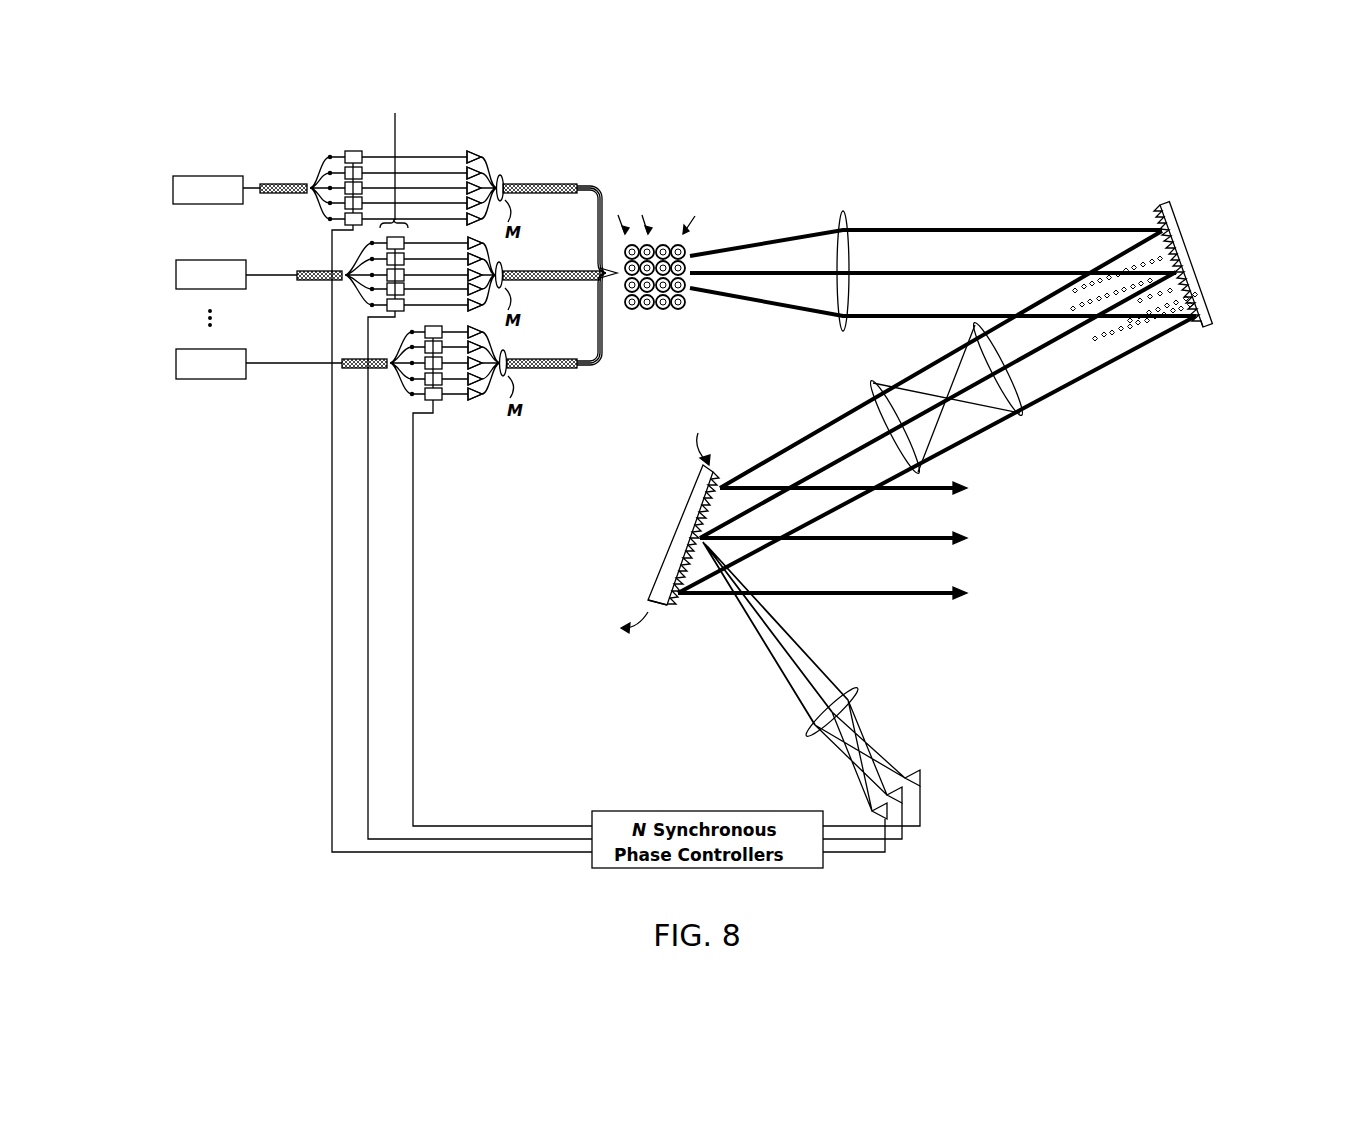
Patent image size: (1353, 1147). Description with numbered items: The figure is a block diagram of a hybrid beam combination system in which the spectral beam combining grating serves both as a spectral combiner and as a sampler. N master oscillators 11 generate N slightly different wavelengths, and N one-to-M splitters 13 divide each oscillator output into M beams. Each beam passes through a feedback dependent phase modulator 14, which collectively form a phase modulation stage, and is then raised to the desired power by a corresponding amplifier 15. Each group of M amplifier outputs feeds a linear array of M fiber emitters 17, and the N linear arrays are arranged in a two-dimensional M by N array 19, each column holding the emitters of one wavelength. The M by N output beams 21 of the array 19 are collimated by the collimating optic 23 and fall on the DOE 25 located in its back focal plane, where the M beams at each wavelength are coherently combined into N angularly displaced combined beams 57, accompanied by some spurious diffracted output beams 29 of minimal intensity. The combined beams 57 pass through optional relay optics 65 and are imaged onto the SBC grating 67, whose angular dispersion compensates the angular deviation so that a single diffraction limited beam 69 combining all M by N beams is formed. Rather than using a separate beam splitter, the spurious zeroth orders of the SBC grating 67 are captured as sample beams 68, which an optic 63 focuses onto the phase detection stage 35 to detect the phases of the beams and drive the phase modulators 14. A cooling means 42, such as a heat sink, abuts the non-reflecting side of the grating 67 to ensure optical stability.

The master oscillators 11 is at (171, 146).
The 1:M splitters 13 is at (381, 397).
The phase modulators 14 is at (338, 141).
The amplifiers 15 is at (455, 143).
The fiber emitters 17 is at (566, 330).
The M×N array 19 is at (687, 322).
The output beams 21 is at (777, 226).
The collimating optic 23 is at (846, 212).
The DOE 25 is at (1166, 203).
The spurious diffracted output beams 29 is at (1128, 258).
The phase detection stage 35 is at (934, 761).
The cooling means 42 is at (665, 545).
The combined beams 57 is at (1058, 405).
The optic 63 is at (857, 690).
The relay optics 65 is at (986, 455).
The SBC grating 67 is at (676, 607).
The sample beams 68 is at (825, 656).
The single diffraction limited beam 69 is at (996, 570).